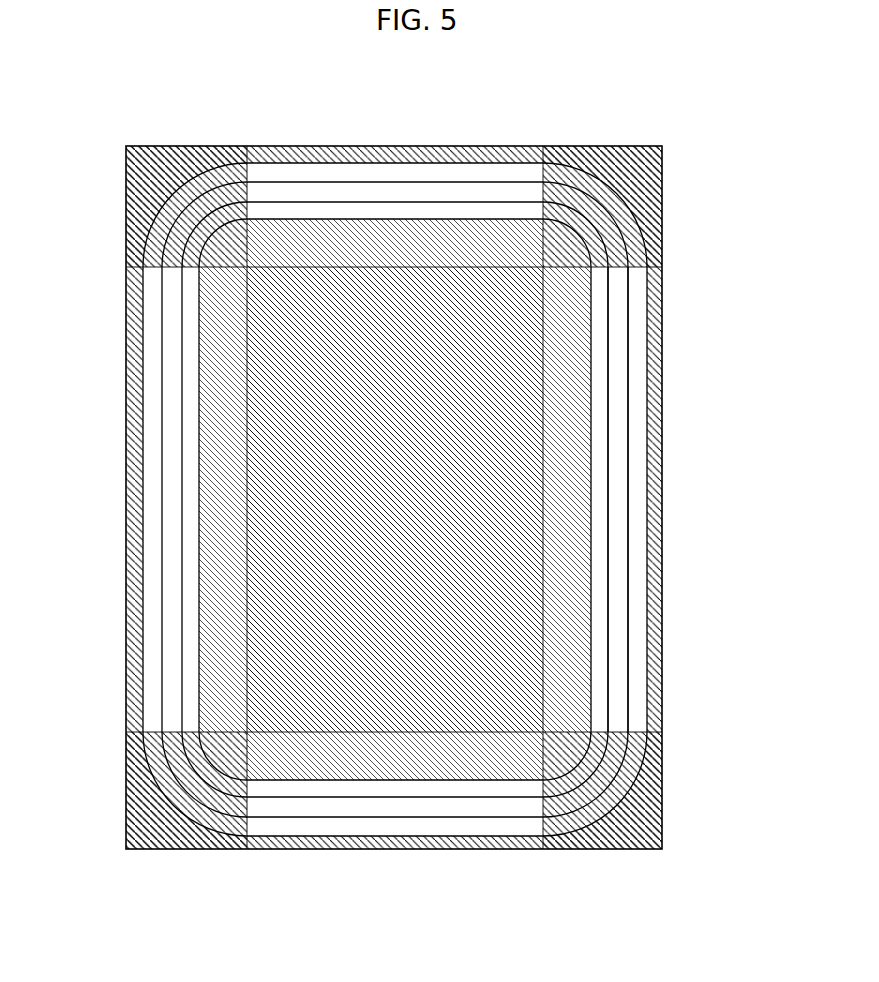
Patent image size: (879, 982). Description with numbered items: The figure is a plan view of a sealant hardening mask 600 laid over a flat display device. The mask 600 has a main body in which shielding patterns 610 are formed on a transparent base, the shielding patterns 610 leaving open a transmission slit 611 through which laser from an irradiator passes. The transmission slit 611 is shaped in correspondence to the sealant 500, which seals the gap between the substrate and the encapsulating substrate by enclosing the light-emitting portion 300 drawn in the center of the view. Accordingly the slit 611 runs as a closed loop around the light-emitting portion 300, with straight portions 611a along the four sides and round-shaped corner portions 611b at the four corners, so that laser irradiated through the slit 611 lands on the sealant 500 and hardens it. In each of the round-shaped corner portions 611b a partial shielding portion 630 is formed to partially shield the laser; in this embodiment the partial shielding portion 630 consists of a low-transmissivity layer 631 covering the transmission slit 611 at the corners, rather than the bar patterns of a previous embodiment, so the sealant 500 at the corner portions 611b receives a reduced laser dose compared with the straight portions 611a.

The light-emitting portion 300 is at (410, 507).
The sealant 500 is at (625, 660).
The sealant hardening mask 600 is at (672, 436).
The shielding patterns 610 is at (662, 368).
The transmission slit 611 is at (397, 505).
The straight portions of the transmission slit 611a is at (537, 131).
The round-shaped corner portions 611b is at (397, 505).
The partial shielding portion 630 is at (397, 548).
The low-transmissivity layer 631 is at (175, 165).